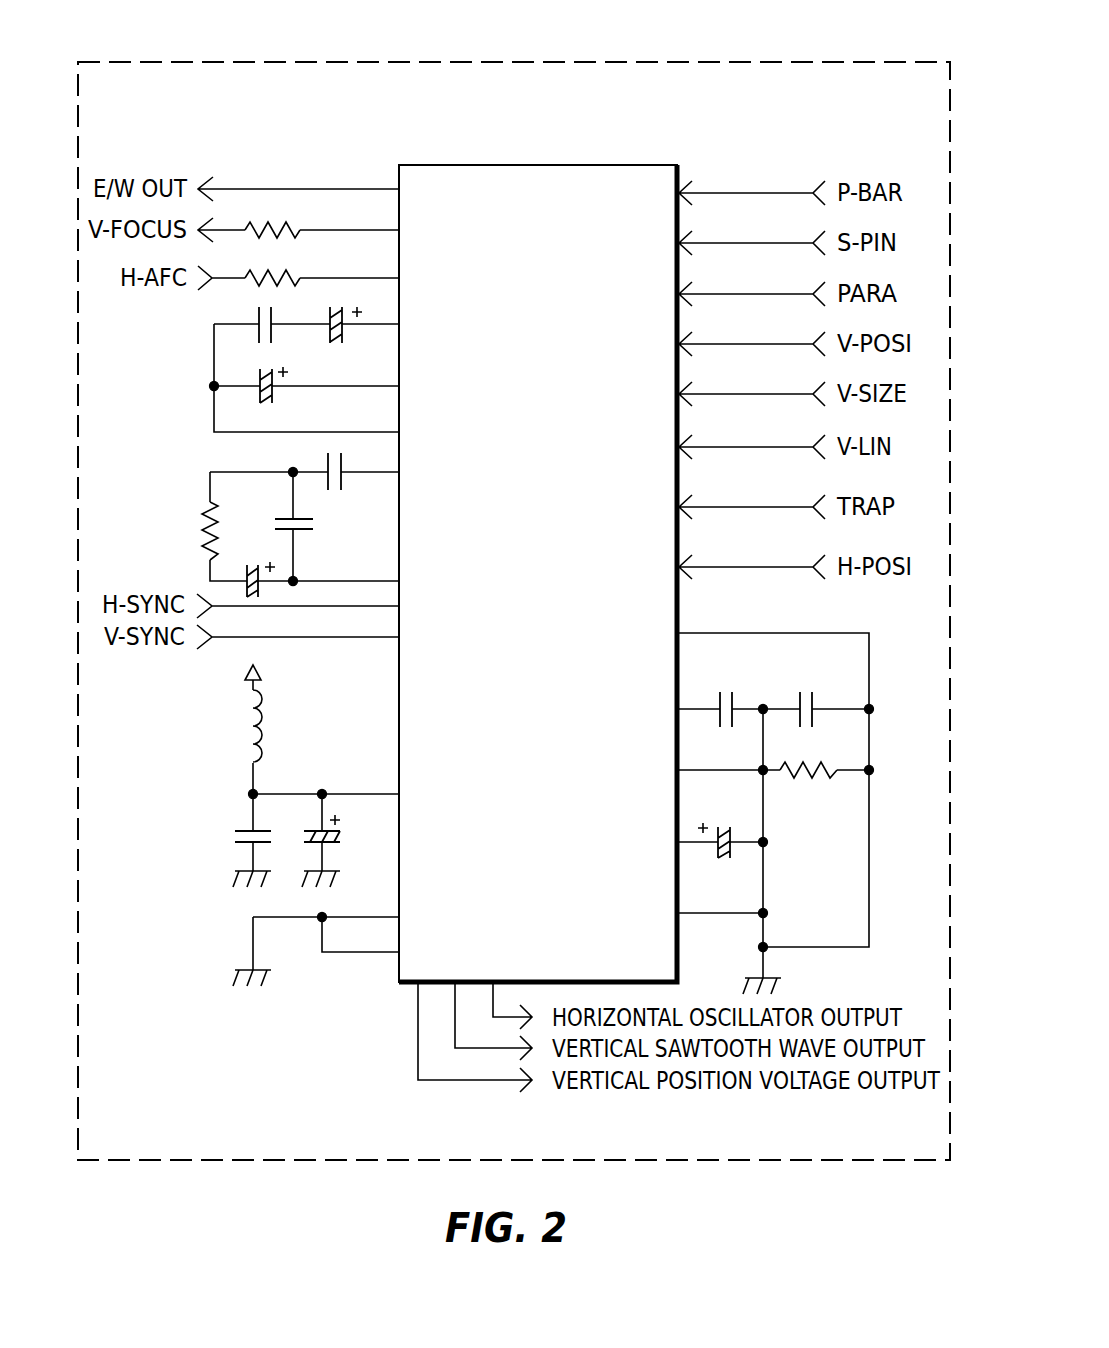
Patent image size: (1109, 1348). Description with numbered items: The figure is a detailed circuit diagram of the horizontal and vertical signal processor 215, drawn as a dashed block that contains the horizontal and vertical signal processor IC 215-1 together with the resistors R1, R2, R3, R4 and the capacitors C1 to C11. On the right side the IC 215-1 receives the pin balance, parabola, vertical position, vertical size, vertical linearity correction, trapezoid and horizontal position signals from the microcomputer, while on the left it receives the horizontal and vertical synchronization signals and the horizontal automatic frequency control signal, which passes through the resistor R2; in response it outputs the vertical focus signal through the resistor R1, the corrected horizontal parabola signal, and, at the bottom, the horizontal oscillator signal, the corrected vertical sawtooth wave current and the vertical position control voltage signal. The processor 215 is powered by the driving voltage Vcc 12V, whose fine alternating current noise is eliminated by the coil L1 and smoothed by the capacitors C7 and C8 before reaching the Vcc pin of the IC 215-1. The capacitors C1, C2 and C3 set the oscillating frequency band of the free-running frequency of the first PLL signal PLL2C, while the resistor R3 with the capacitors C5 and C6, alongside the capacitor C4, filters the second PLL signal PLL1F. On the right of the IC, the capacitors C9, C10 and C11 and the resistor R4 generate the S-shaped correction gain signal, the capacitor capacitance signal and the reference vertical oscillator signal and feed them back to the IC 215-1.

The horizontal and vertical signal processor 215 is at (717, 62).
The horizontal and vertical signal processor IC 215-1 is at (567, 168).
The driving voltage Vcc 12V is at (301, 671).
The capacitor C1 is at (247, 330).
The capacitor C2 is at (353, 330).
The capacitor C3 is at (255, 391).
The capacitor C4 is at (254, 566).
The capacitor C5 is at (310, 529).
The capacitor C6 is at (352, 478).
The capacitor C7 is at (234, 837).
The capacitor C8 is at (339, 833).
The capacitor C9 is at (724, 692).
The capacitor C10 is at (800, 692).
The capacitor C11 is at (720, 826).
The resistor R1 is at (272, 214).
The resistor R2 is at (272, 262).
The resistor R3 is at (191, 531).
The resistor R4 is at (808, 789).
The coil L1 is at (275, 726).